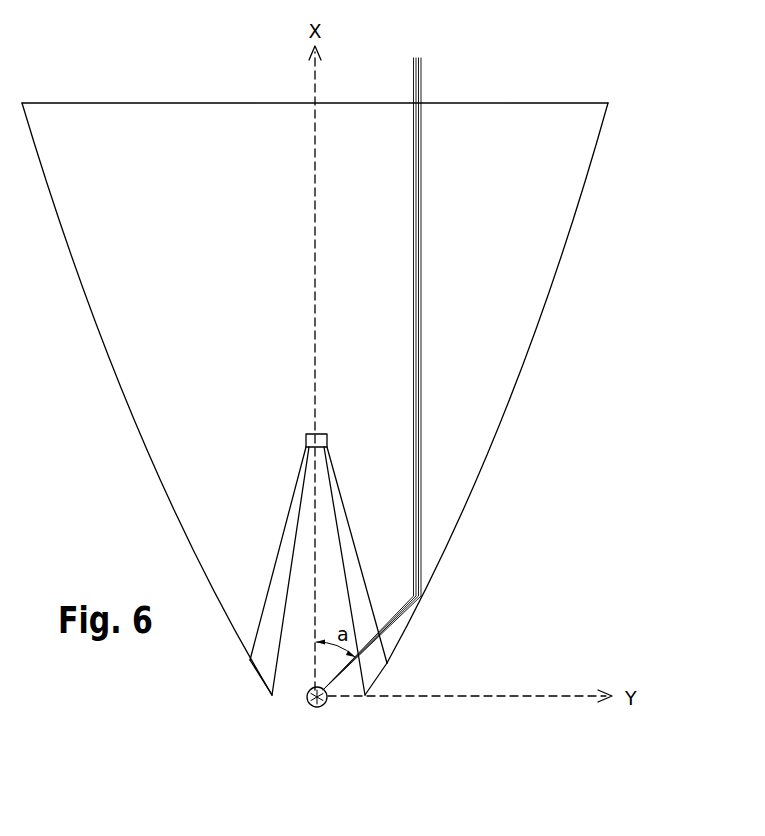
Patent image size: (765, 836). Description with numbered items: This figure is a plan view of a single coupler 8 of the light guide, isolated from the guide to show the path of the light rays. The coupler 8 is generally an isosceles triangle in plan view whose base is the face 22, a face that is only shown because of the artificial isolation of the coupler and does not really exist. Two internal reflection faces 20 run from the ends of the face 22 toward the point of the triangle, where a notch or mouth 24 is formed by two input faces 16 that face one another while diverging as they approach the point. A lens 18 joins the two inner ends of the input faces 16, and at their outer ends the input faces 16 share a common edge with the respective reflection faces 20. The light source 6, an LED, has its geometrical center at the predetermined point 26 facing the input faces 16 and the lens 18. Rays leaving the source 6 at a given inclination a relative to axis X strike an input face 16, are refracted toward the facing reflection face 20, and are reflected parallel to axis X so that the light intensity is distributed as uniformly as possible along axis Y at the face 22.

The light source 6 is at (319, 706).
The coupler 8 is at (335, 377).
The input faces 16 is at (279, 680).
The lens 18 is at (320, 460).
The internal reflection faces 20 is at (86, 270).
The face 22 is at (111, 97).
The notch 24 is at (337, 594).
The predetermined point 26 is at (307, 696).